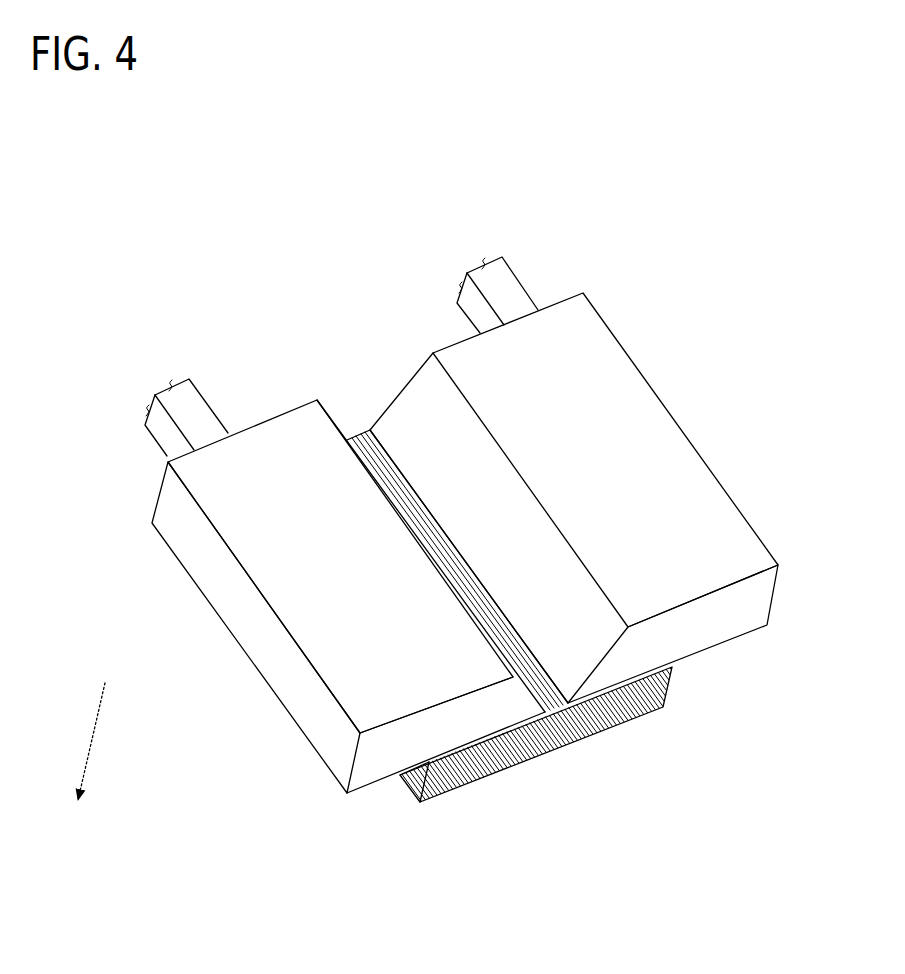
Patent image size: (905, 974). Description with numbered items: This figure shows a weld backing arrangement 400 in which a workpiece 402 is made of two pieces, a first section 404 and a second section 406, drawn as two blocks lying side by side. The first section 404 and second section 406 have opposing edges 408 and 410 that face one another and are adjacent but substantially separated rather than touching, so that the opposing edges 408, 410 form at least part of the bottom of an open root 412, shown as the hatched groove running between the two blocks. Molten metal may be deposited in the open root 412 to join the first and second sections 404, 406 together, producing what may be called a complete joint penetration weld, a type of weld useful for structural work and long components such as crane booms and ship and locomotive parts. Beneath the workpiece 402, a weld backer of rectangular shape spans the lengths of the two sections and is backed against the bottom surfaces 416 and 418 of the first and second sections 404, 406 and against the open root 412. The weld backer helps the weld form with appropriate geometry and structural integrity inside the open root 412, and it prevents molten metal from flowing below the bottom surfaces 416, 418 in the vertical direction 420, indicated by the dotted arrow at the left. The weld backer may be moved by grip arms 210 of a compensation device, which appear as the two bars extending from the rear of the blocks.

The weld backing arrangement 400 is at (464, 130).
The workpiece 402 is at (661, 316).
The first section 404 is at (767, 625).
The second section 406 is at (347, 793).
The opposing edge 408 is at (545, 712).
The opposing edge 410 is at (568, 703).
The open root 412 is at (543, 678).
The bottom surface 416 is at (729, 651).
The bottom surface 418 is at (380, 803).
The vertical direction 420 is at (104, 699).
The grip arms 210 is at (463, 312).